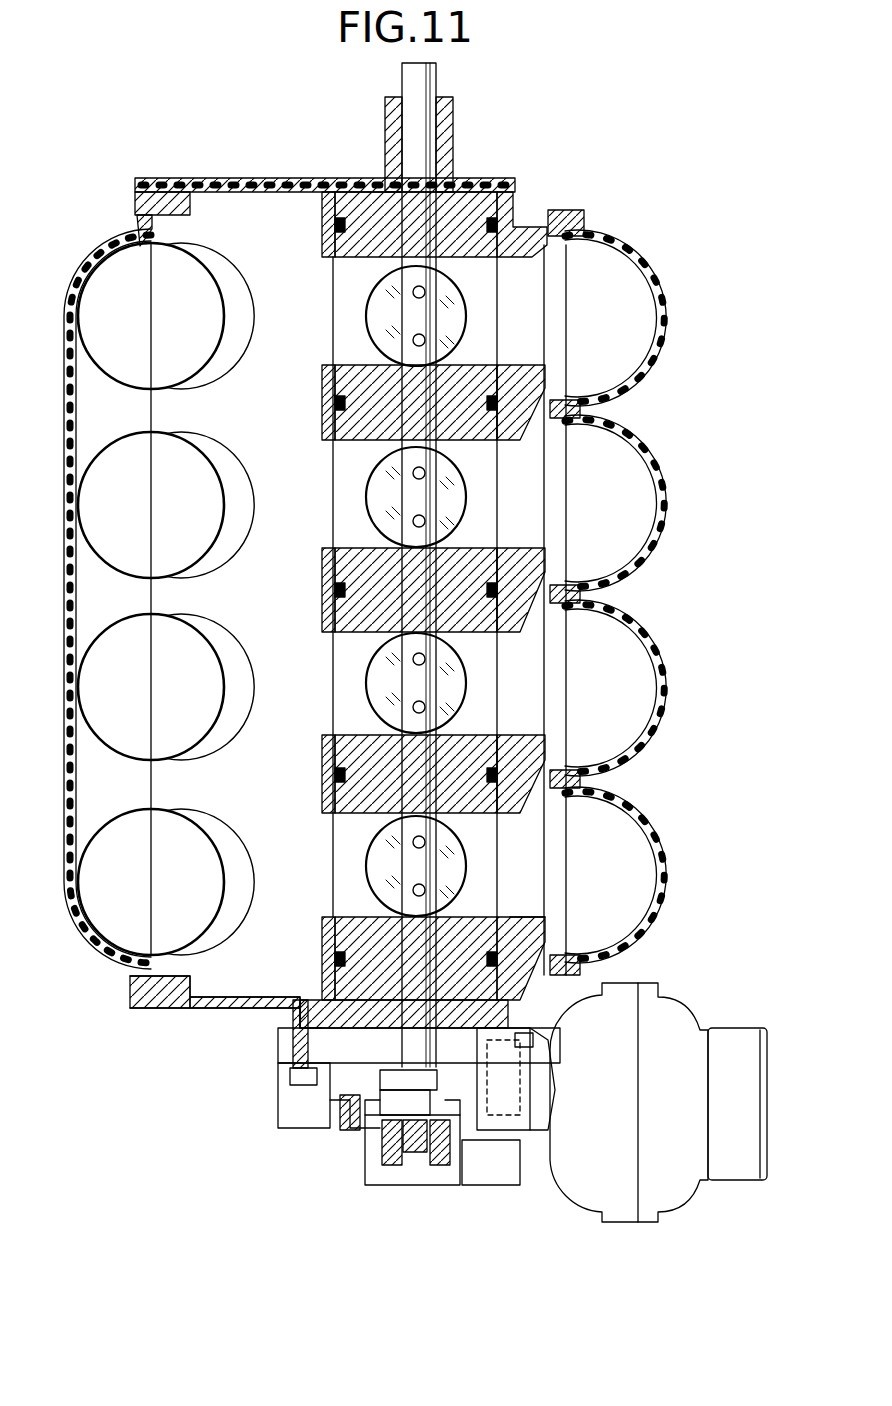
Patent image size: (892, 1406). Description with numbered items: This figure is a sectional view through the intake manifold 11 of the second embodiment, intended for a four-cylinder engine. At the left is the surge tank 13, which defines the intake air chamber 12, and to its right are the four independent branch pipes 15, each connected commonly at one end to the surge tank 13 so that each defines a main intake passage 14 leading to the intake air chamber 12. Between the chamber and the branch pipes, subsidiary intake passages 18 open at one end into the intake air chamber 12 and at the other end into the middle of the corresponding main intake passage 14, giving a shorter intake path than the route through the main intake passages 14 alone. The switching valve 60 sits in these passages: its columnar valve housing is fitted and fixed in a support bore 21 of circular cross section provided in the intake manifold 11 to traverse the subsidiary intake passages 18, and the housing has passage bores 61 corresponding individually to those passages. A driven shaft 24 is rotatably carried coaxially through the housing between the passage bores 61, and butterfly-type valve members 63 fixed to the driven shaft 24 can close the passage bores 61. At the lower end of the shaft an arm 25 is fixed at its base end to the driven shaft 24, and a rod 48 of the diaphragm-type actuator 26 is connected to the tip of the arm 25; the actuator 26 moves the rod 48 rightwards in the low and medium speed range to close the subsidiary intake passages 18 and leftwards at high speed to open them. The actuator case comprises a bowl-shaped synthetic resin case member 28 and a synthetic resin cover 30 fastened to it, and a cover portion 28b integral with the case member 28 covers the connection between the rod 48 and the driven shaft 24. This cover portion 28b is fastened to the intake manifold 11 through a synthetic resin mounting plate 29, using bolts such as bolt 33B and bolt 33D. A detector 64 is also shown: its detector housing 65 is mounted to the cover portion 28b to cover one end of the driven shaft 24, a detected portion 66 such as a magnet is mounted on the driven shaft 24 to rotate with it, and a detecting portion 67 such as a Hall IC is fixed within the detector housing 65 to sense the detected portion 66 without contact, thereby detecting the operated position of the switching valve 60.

The intake manifold 11 is at (282, 175).
The intake air chamber 12 is at (214, 599).
The surge tank 13 is at (128, 250).
The main intake passage 14 is at (604, 606).
The branch pipe 15 is at (668, 330).
The subsidiary intake passage 18 is at (328, 262).
The support bore 21 is at (478, 945).
The driven shaft 24 is at (412, 692).
The arm 25 is at (378, 1076).
The actuator 26 is at (658, 1089).
The case member 28 is at (556, 1194).
The cover portion 28b is at (275, 1085).
The mounting plate 29 is at (278, 1042).
The cover 30 is at (653, 1183).
The bolt 33B is at (278, 1057).
The bolt 33D is at (535, 1042).
The rod 48 is at (492, 1187).
The switching valve 60 is at (364, 320).
The passage bore 61 is at (345, 262).
The valve member 63 is at (460, 318).
The detector 64 is at (375, 1165).
The detector housing 65 is at (442, 1170).
The detected portion 66 is at (415, 1160).
The detecting portion 67 is at (396, 1168).